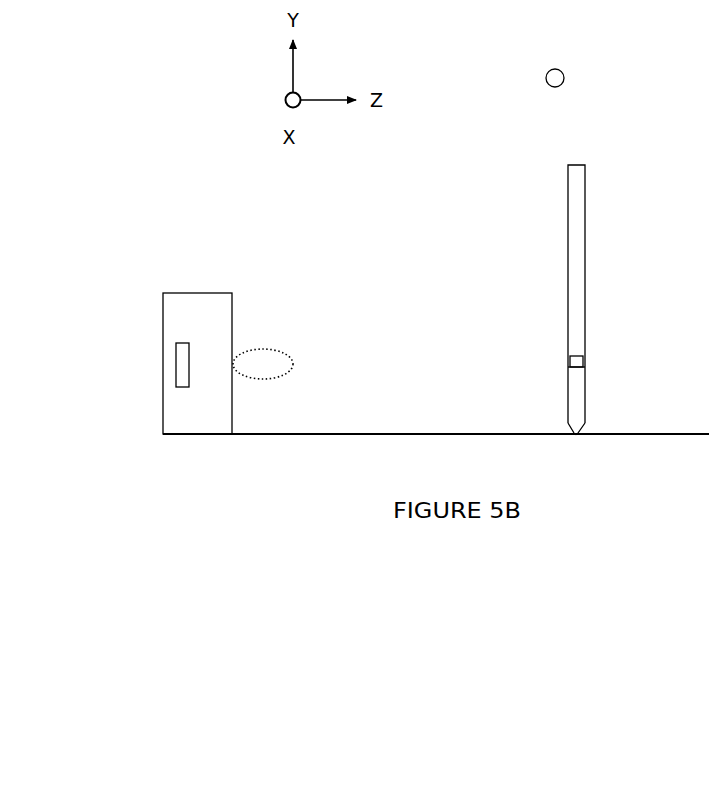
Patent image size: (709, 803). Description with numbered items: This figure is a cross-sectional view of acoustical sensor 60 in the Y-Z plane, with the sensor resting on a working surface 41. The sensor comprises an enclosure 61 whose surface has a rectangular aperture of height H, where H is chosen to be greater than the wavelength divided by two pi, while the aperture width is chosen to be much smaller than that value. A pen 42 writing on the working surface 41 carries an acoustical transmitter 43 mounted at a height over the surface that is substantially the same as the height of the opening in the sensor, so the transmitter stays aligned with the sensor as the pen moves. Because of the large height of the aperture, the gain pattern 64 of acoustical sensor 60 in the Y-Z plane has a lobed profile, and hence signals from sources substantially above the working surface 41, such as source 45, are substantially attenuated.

The working surface 41 is at (328, 435).
The pen 42 is at (574, 254).
The acoustical transmitter 43 is at (583, 362).
The source 45 is at (564, 74).
The acoustical sensor 60 is at (149, 239).
The enclosure 61 is at (186, 296).
The gain pattern 64 is at (290, 352).
The height of aperture H is at (226, 363).